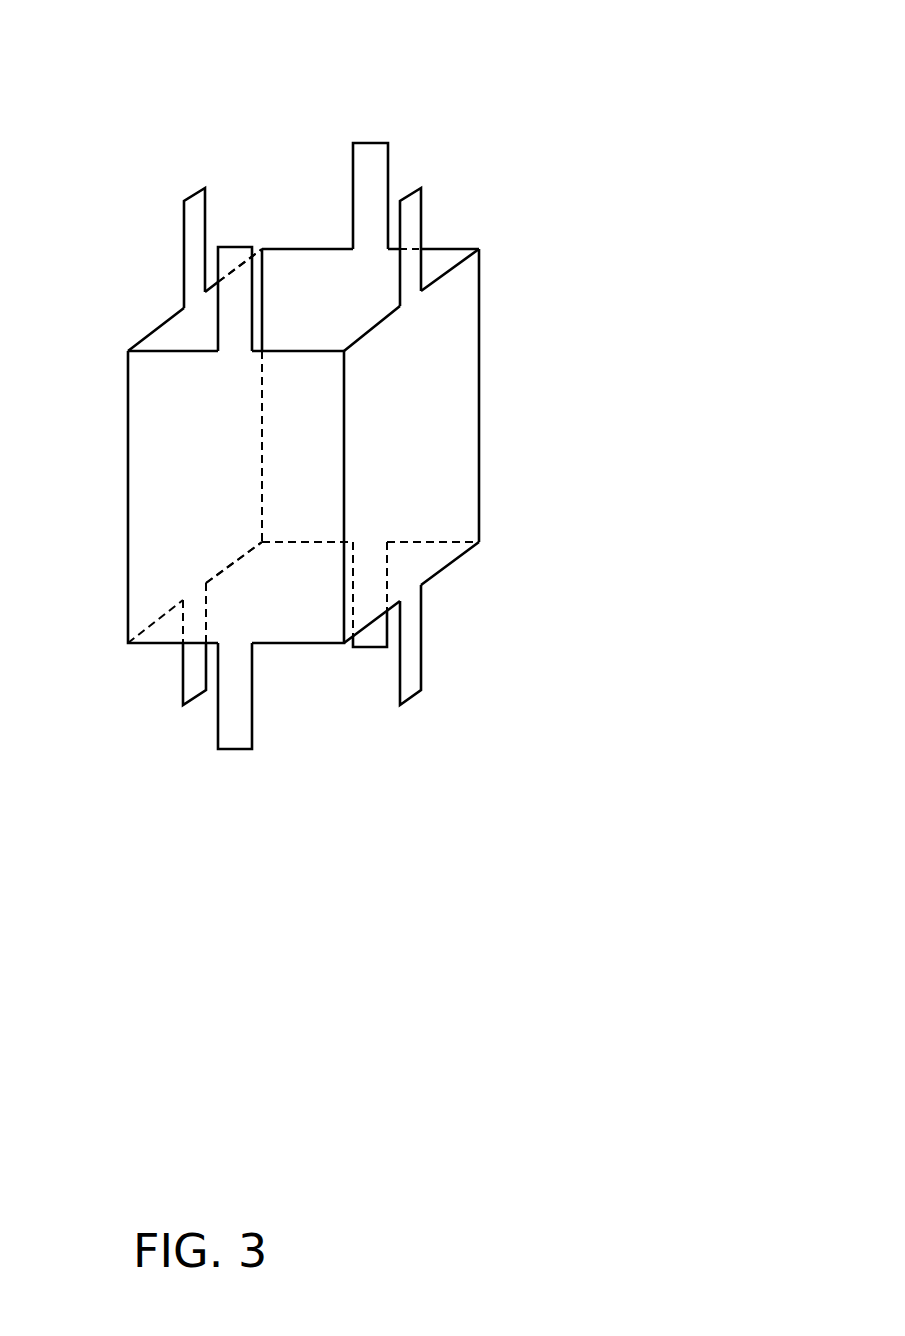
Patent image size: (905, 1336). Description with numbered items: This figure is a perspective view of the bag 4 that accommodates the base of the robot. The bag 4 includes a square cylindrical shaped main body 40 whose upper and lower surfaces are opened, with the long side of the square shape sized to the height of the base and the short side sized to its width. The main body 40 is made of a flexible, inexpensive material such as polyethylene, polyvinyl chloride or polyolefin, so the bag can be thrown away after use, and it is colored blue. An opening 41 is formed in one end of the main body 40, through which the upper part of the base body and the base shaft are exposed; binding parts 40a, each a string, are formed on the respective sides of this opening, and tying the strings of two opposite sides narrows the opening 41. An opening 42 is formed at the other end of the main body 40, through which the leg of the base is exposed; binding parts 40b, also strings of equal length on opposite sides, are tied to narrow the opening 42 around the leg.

The bag 4 is at (563, 115).
The main body 40 is at (480, 385).
The binding part 40a is at (184, 237).
The binding part 40b is at (185, 672).
The opening 41 is at (313, 283).
The opening 42 is at (285, 622).